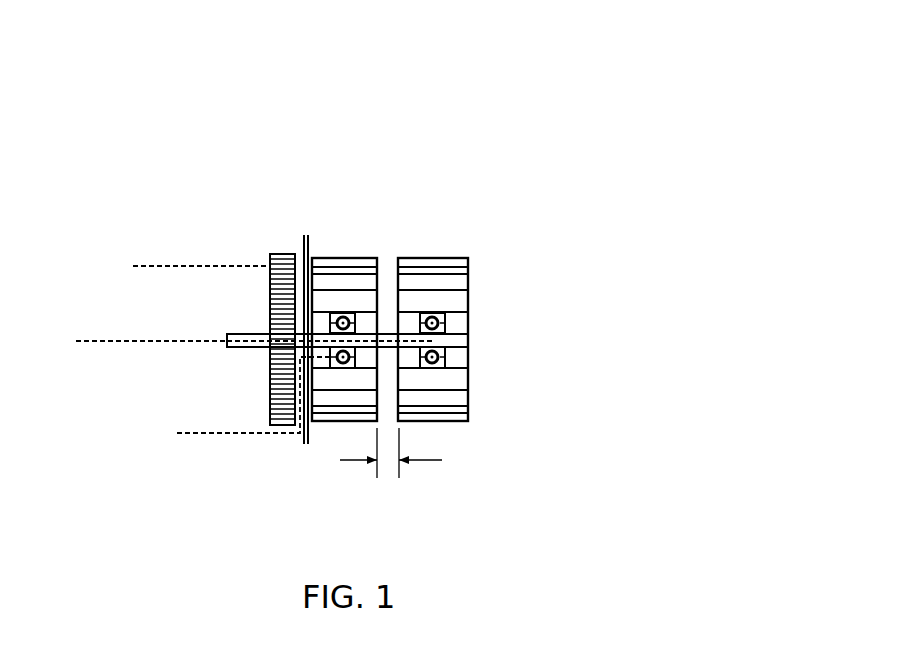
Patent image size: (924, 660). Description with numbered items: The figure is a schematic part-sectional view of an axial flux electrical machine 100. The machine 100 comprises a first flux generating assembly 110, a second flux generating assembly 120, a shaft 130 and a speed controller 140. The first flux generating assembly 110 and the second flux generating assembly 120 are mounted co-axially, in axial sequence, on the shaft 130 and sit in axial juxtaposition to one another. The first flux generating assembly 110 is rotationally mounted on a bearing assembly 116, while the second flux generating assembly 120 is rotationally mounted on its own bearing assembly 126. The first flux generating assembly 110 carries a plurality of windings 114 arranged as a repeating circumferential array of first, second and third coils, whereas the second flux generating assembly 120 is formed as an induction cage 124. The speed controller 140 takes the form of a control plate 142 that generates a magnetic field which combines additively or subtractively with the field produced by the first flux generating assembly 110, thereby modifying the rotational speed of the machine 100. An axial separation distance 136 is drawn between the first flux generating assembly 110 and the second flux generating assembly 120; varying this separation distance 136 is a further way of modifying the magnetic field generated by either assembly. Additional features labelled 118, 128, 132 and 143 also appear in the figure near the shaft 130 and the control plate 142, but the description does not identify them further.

The axial flux electrical machine 100 is at (533, 103).
The first flux generating assembly 110 is at (335, 398).
The windings 114 is at (320, 300).
The bearing assembly 116 is at (342, 312).
The belt/housing outline 118 is at (198, 434).
The second flux generating assembly 120 is at (445, 399).
The induction cage 124 is at (463, 297).
The bearing assembly 126 is at (435, 312).
The rotation axis 128 is at (84, 341).
The shaft 130 is at (247, 334).
The shaft end portion 132 is at (185, 342).
The axial separation distance 136 is at (427, 461).
The speed controller 140 is at (291, 254).
The control plate 142 is at (280, 254).
The gear reference line 143 is at (142, 266).